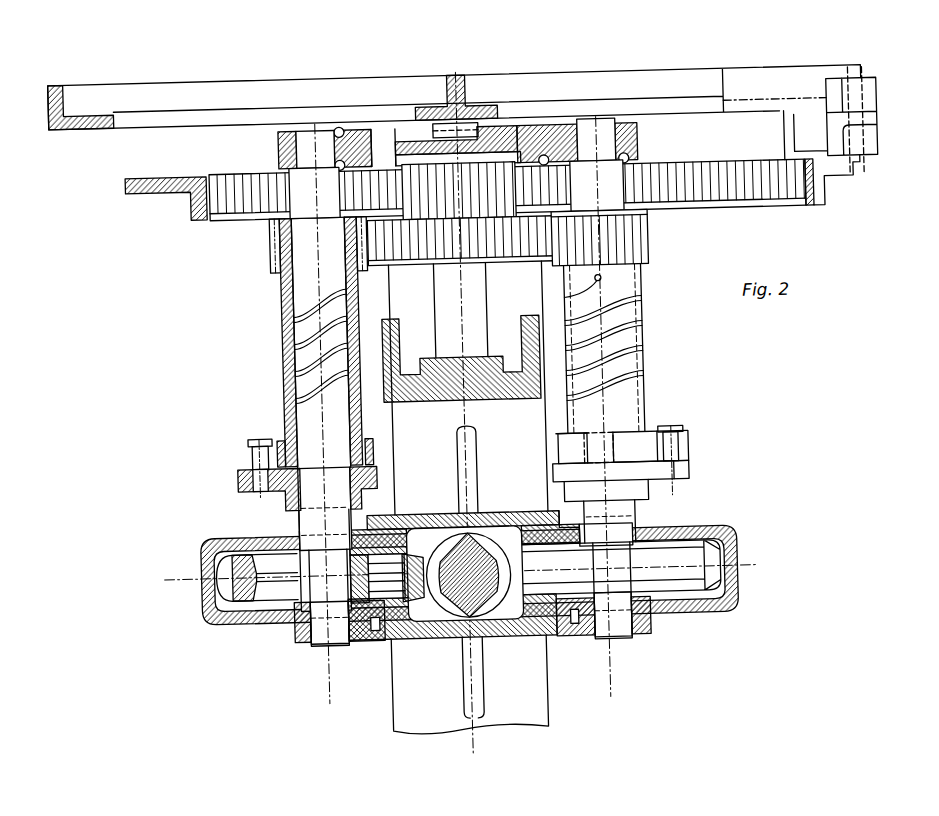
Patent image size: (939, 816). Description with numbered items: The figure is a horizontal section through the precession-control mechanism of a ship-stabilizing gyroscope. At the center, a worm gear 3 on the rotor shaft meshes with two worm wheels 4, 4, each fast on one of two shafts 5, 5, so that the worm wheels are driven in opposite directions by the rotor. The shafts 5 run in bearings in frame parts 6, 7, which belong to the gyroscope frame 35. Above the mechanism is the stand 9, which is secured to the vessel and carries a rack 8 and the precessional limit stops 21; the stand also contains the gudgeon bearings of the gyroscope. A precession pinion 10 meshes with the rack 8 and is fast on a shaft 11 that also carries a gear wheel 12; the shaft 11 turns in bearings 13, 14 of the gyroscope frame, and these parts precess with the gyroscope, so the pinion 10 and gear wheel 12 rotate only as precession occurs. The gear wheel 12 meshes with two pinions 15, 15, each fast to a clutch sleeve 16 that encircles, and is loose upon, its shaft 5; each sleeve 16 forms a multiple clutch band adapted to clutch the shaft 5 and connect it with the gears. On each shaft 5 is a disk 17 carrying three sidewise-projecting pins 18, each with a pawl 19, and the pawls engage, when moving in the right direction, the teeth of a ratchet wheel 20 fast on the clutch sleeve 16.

The worm gear 3 is at (404, 630).
The worm wheel 4 is at (706, 565).
The shaft 5 is at (641, 672).
The frame part 6 is at (287, 628).
The frame part 7 is at (285, 147).
The rack 8 is at (759, 204).
The stand 9 is at (707, 92).
The precession pinion 10 is at (506, 169).
The shaft 11 is at (478, 304).
The gear wheel 12 is at (428, 256).
The bearing 13 is at (481, 358).
The bearing 14 is at (444, 123).
The pinion 15 is at (274, 247).
The clutch sleeve 16 is at (286, 299).
The disk 17 is at (237, 478).
The pin 18 is at (250, 447).
The pawl 19 is at (687, 453).
The ratchet wheel 20 is at (281, 439).
The precessional limit stop 21 is at (814, 144).
The gyroscope frame 35 is at (537, 124).